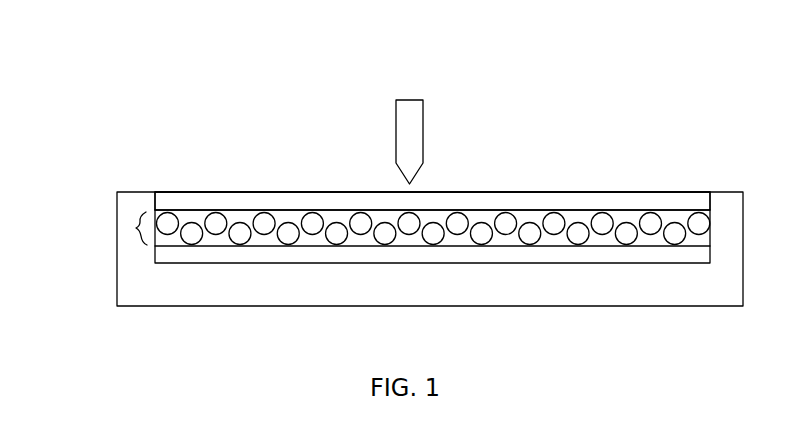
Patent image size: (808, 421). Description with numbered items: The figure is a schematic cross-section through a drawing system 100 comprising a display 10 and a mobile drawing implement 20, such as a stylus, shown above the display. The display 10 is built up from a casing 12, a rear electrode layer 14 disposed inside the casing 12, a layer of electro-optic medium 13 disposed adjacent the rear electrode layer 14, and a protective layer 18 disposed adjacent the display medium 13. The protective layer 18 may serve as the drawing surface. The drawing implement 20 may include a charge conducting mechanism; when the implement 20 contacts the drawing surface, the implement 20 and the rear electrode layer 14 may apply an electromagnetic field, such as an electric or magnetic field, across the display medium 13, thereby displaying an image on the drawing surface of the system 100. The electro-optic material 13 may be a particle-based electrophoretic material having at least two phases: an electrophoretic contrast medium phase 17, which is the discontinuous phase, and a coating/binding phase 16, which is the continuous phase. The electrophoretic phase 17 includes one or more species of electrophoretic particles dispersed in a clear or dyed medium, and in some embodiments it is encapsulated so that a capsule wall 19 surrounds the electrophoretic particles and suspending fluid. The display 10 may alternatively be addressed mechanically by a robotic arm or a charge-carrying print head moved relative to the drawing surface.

The drawing system 100 is at (446, 167).
The display 10 is at (446, 201).
The casing 12 is at (735, 222).
The layer of electro-optic medium 13 is at (131, 222).
The rear electrode layer 14 is at (617, 263).
The coating/binding phase 16 is at (473, 210).
The electrophoretic contrast medium phase 17 is at (163, 219).
The protective layer 18 is at (622, 203).
The capsule wall 19 is at (358, 237).
The drawing implement 20 is at (424, 118).